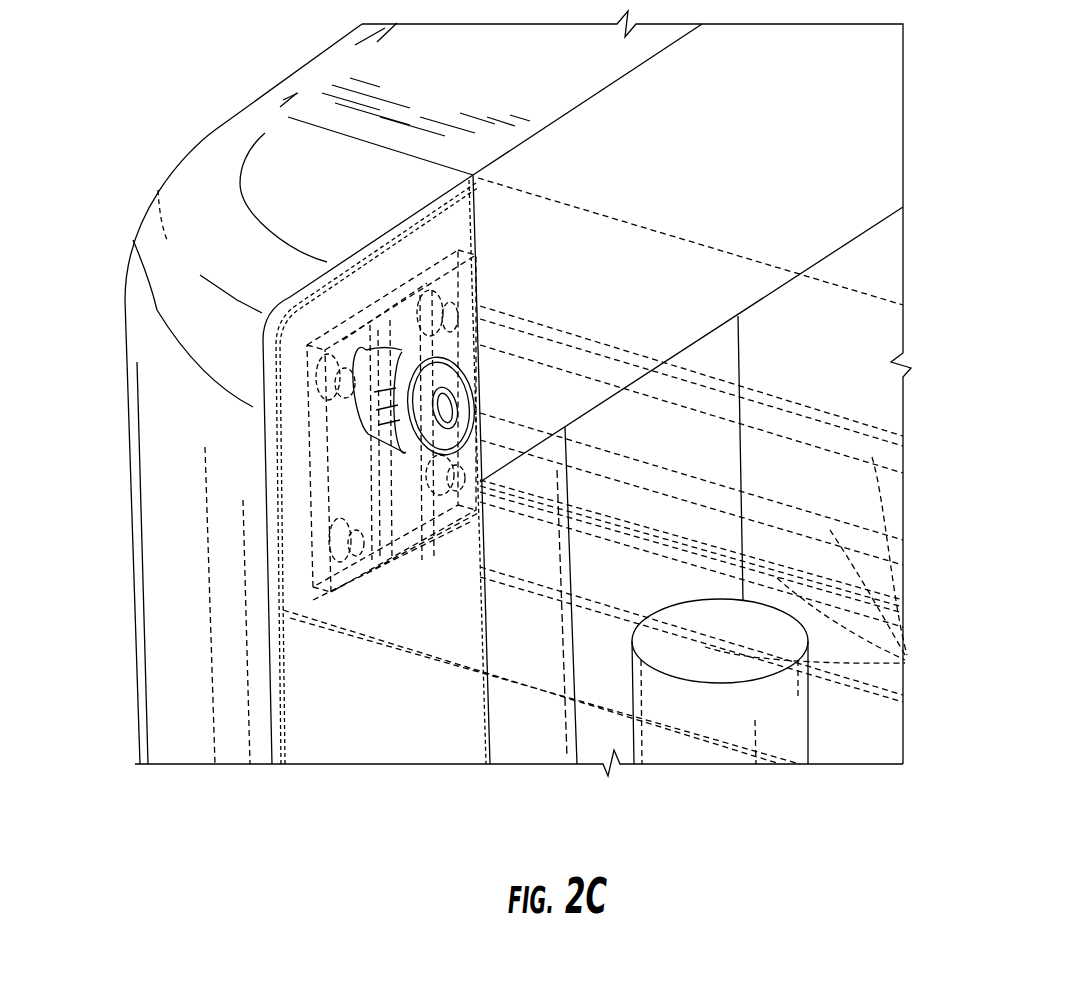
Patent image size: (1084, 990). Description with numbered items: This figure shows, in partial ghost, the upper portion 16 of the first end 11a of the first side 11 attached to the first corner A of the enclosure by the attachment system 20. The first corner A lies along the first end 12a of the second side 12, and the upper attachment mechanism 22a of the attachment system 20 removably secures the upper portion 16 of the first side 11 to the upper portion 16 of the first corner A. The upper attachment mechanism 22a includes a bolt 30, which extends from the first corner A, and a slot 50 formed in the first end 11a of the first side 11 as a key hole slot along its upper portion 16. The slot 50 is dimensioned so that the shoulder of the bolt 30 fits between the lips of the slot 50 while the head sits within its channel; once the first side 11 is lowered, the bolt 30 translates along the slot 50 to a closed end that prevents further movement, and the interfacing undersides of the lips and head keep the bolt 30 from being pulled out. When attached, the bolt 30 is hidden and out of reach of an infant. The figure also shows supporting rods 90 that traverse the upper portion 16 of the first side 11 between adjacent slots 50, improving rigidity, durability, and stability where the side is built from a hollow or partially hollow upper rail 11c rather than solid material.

The attachment system 20 is at (95, 136).
The first corner A is at (161, 167).
The upper attachment mechanism 22a is at (287, 369).
The upper portion 16 is at (103, 513).
The bolt 30 is at (403, 440).
The second side 12 is at (148, 556).
The first end of the second side 12a is at (176, 764).
The first end of the first side 11a is at (358, 642).
The first side 11 is at (535, 675).
The slot 50 is at (405, 575).
The upper rail 11c is at (862, 348).
The supporting rods 90 is at (910, 663).